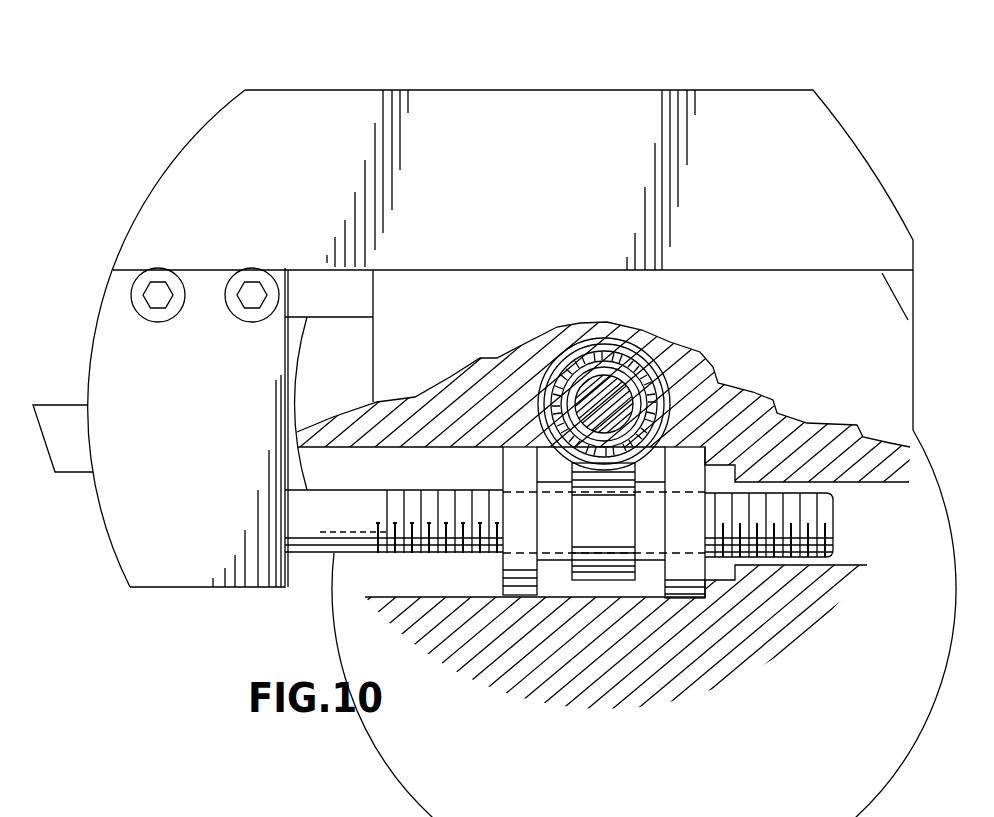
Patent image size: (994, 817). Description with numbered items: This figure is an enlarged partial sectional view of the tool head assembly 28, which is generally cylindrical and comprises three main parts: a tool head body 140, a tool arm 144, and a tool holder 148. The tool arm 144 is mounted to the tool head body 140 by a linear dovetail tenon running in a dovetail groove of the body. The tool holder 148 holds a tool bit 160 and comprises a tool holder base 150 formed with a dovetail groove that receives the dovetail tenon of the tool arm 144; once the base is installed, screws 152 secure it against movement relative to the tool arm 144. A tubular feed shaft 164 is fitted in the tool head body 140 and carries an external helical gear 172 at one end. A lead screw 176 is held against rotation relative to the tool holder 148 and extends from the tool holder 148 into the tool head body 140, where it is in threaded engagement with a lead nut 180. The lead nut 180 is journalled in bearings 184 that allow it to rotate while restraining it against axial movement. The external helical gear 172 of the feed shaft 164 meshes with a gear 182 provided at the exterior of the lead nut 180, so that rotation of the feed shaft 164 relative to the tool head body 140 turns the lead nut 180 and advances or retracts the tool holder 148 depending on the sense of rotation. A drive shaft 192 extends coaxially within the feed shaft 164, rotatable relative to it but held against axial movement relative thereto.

The tool head assembly 28 is at (120, 146).
The tool arm 144 is at (732, 105).
The tool holder 148 is at (102, 543).
The tool holder base 150 is at (190, 588).
The tool bit 160 is at (62, 404).
The screws 152 is at (230, 322).
The tubular feed shaft 164 is at (555, 390).
The tool head body 140 is at (676, 693).
The lead screw 176 is at (310, 558).
The bearings 184 is at (503, 573).
The lead nut 180 is at (553, 562).
The gear 182 is at (608, 580).
The external helical gear 172 is at (654, 362).
The drive shaft 192 is at (598, 380).